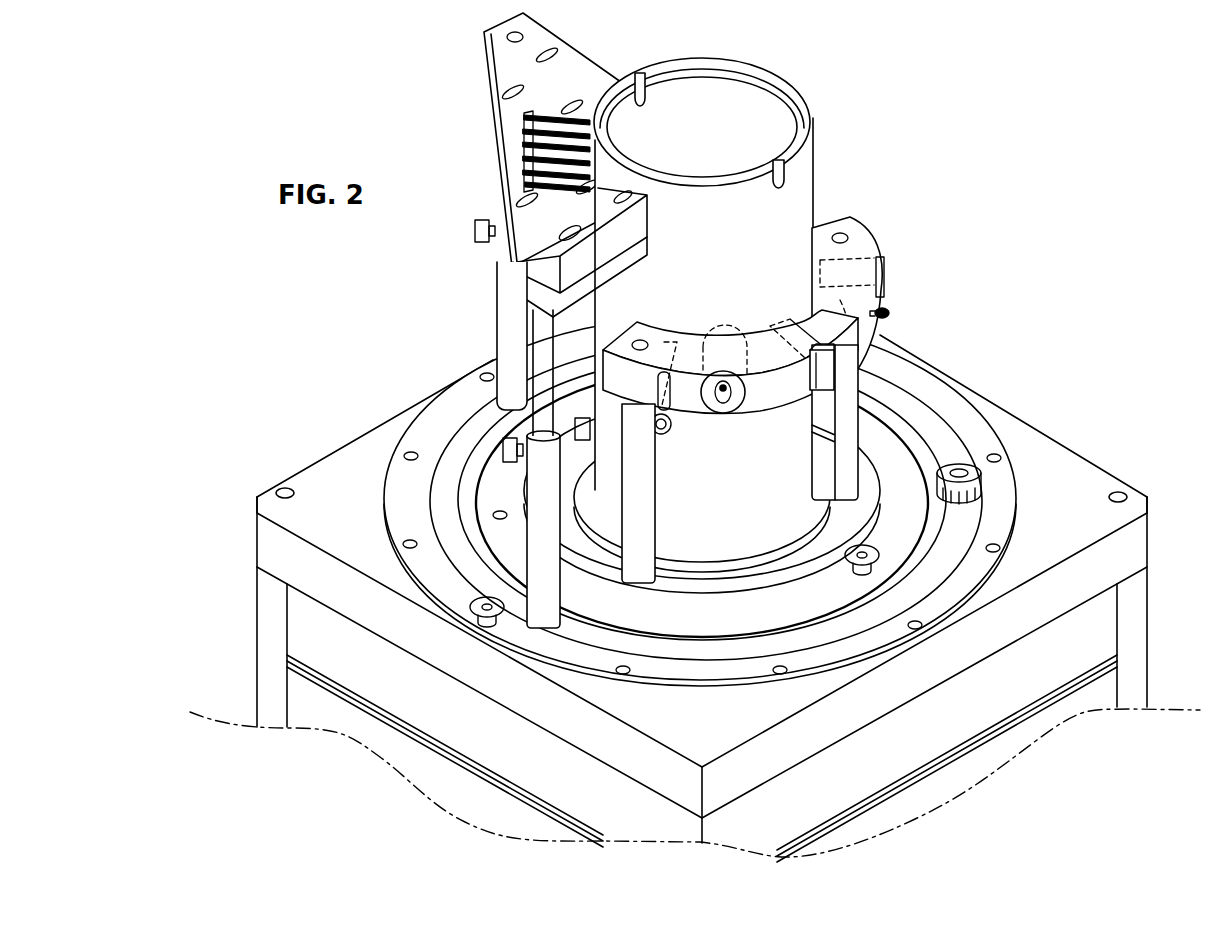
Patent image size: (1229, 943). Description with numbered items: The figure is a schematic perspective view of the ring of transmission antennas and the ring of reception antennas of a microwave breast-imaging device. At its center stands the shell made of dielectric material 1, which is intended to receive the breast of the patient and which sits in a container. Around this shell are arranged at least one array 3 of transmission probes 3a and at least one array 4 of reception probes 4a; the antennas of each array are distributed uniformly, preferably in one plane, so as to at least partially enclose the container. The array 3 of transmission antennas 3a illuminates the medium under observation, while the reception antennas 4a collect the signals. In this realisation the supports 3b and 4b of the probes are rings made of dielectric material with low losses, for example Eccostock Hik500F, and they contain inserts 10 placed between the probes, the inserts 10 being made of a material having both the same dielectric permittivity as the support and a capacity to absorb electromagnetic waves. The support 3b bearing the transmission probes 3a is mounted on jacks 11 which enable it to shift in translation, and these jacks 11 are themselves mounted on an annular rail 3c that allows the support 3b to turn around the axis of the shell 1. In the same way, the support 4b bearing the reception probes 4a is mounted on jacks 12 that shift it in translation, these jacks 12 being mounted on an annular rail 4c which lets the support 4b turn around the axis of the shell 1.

The shell made of dielectric material 1 is at (806, 116).
The array of transmission probes 3 is at (853, 245).
The transmission probes 3a is at (889, 313).
The support of the transmission probes 3b is at (627, 380).
The annular rail 3c is at (848, 503).
The array of reception probes 4 is at (510, 66).
The reception probes 4a is at (543, 165).
The support of the reception probes 4b is at (527, 276).
The annular rail 4c is at (951, 543).
The inserts 10 is at (533, 127).
The jacks 11 is at (637, 503).
The jacks 12 is at (512, 330).